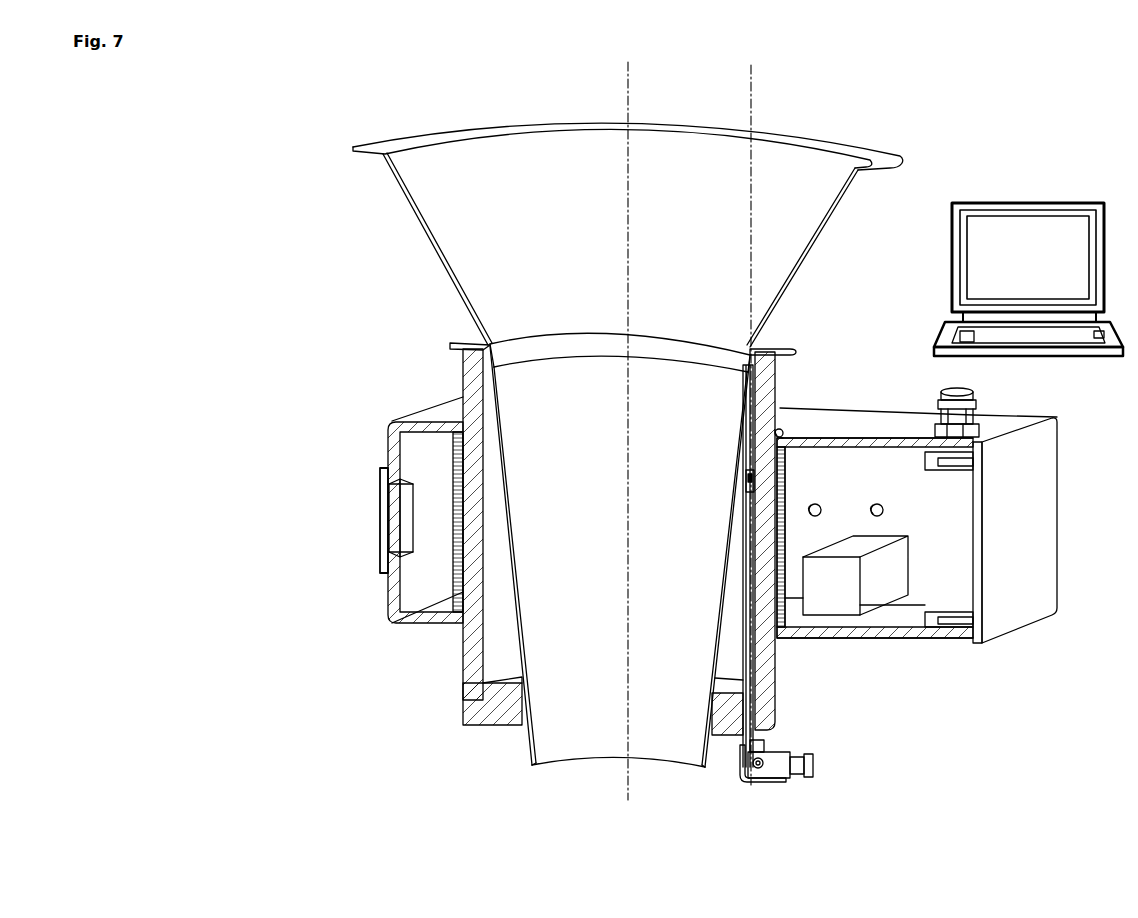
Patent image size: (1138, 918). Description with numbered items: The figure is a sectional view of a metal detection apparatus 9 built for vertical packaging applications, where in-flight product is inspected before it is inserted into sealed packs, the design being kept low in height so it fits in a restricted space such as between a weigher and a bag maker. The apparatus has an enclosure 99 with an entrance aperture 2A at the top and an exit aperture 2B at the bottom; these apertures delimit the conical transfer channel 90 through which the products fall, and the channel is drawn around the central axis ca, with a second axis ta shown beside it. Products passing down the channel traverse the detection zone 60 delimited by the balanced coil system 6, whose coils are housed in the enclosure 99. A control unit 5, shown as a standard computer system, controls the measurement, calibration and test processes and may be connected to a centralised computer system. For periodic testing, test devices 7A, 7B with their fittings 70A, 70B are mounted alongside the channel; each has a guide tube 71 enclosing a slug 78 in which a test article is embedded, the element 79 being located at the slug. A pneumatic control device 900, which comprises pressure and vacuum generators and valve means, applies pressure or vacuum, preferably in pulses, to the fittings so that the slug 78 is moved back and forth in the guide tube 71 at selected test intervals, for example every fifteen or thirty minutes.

The central axis ca is at (630, 104).
The tilt axis ta is at (754, 104).
The metal detection apparatus 9 is at (1030, 224).
The control unit 5 is at (1028, 257).
The conical transfer channel 90 is at (628, 313).
The detection zone 60 is at (573, 503).
The entrance aperture 2A is at (678, 370).
The exit aperture 2B is at (590, 744).
The enclosure 99 is at (436, 412).
The balanced coil system 6 is at (452, 570).
The sensor element 79 is at (707, 474).
The slug 78 is at (746, 478).
The guide tube 71 is at (750, 660).
The pneumatic control device 900 is at (855, 575).
The first sensor 7A is at (827, 781).
The first sensor fitting 70A is at (827, 781).
The second sensor 7B is at (827, 781).
The second sensor fitting 70B is at (812, 764).